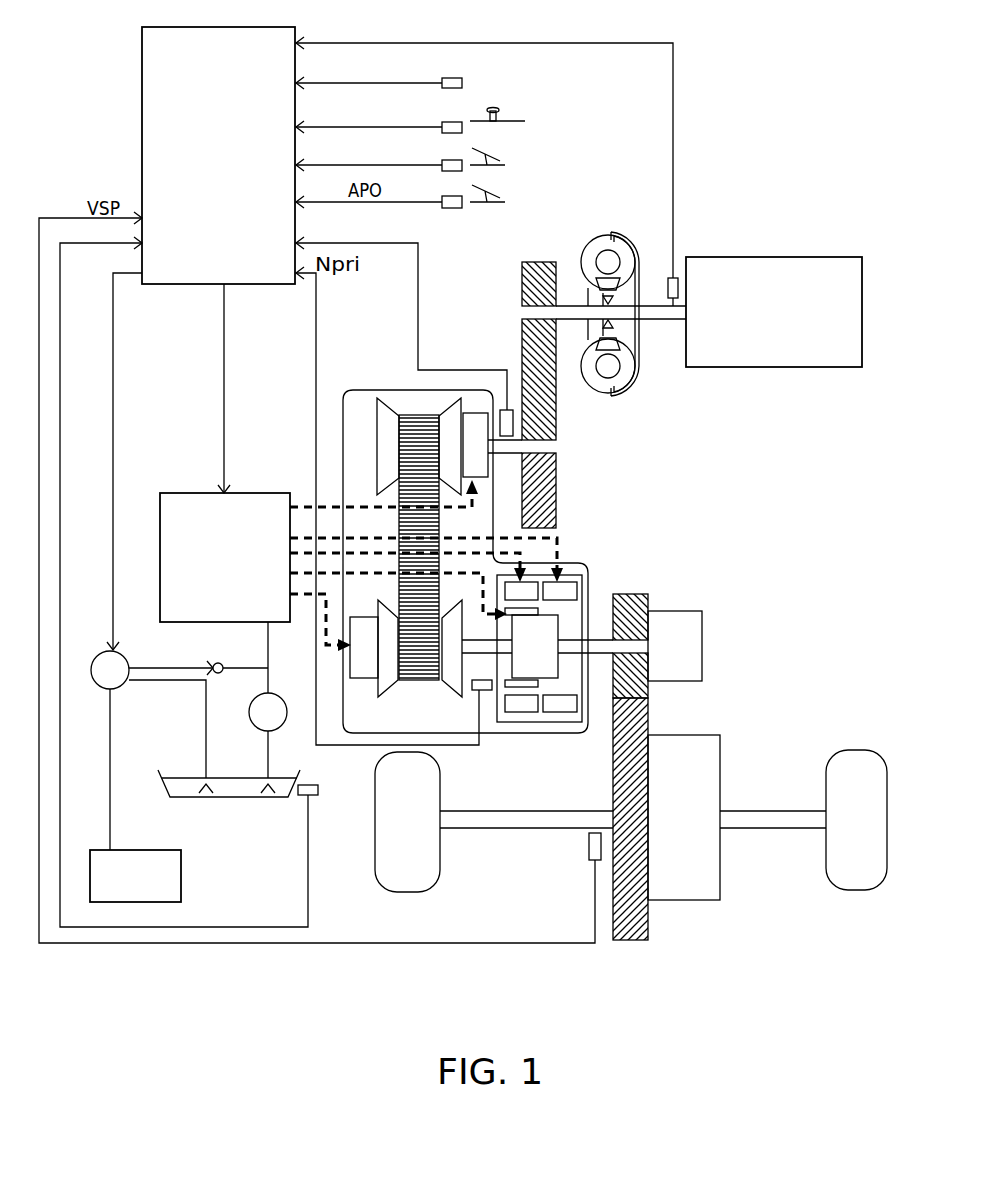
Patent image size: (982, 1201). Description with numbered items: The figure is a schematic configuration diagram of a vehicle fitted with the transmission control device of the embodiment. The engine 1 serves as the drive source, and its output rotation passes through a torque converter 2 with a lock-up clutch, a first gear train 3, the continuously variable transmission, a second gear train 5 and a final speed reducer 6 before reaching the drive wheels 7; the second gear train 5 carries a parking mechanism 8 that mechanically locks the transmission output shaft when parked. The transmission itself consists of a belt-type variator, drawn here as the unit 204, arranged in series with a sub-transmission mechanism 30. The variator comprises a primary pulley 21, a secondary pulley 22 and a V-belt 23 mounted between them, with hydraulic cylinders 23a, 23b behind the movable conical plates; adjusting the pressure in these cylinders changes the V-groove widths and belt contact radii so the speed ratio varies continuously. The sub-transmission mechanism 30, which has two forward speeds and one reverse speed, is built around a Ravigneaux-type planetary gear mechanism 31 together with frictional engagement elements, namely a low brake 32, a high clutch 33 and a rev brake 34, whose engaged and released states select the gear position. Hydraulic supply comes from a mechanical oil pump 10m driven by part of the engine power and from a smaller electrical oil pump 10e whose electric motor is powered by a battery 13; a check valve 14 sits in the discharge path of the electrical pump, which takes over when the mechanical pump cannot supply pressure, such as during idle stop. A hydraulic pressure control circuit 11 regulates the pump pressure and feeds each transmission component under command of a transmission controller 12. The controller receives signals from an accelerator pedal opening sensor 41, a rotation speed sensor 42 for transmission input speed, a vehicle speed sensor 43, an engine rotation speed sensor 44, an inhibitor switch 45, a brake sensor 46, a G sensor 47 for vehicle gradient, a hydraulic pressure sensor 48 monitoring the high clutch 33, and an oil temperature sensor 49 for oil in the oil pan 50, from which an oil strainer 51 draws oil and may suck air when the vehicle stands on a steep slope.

The engine 1 is at (852, 272).
The torque converter 2 is at (640, 265).
The first gear train 3 is at (540, 255).
The second gear train 5 is at (633, 950).
The final speed reducer 6 is at (684, 888).
The drive wheels 7 is at (408, 878).
The parking mechanism 8 is at (686, 638).
The electrical oil pump 10e is at (103, 652).
The mechanical oil pump 10m is at (273, 722).
The hydraulic pressure control circuit 11 is at (180, 498).
The transmission controller 12 is at (152, 68).
The battery 13 is at (170, 888).
The check valve 14 is at (217, 676).
The primary pulley 21 is at (390, 447).
The secondary pulley 22 is at (450, 682).
The V-belt 23 is at (420, 414).
The hydraulic cylinder 23a is at (472, 428).
The hydraulic cylinder 23b is at (360, 680).
The variator (continuously variable transmission mechanism) 204 is at (362, 416).
The sub-transmission mechanism 30 is at (588, 566).
The Ravigneaux-type planetary gear mechanism 31 is at (540, 630).
The low brake 32 is at (523, 590).
The high clutch 33 is at (522, 688).
The rev brake 34 is at (557, 590).
The accelerator pedal opening sensor 41 is at (452, 208).
The rotation speed sensor 42 is at (506, 409).
The vehicle speed sensor 43 is at (589, 842).
The engine rotation speed sensor 44 is at (673, 300).
The inhibitor switch 45 is at (452, 123).
The brake sensor 46 is at (451, 168).
The G sensor 47 is at (452, 78).
The hydraulic pressure sensor 48 is at (480, 692).
The oil temperature sensor 49 is at (318, 796).
The oil pan 50 is at (232, 798).
The oil strainer 51 is at (200, 798).